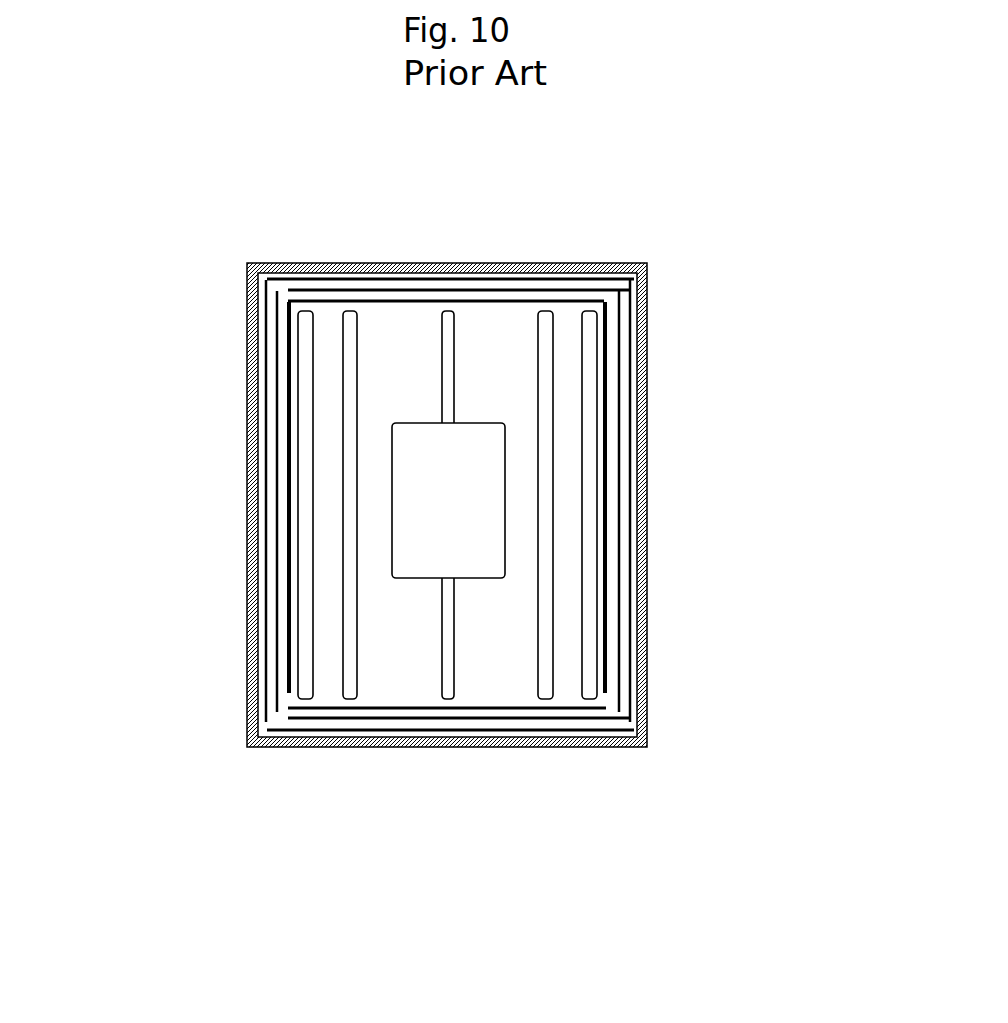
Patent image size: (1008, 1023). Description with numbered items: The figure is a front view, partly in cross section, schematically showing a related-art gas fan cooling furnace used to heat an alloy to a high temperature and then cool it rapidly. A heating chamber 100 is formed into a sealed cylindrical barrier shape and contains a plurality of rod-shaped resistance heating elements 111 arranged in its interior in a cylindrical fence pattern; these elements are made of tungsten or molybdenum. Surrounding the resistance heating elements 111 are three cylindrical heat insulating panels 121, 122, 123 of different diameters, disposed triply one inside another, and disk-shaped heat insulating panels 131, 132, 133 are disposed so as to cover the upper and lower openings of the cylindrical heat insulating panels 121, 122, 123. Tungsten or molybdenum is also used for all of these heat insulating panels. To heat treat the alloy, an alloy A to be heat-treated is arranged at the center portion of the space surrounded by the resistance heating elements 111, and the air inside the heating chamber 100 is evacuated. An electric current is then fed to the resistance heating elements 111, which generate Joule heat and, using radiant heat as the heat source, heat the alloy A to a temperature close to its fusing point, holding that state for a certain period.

The heating chamber 100 is at (438, 263).
The resistance heating element 111 is at (678, 473).
The heat insulating panel 121 is at (683, 376).
The heat insulating panel 122 is at (277, 520).
The heat insulating panel 123 is at (289, 650).
The heat insulating panel 131 is at (320, 770).
The heat insulating panel 132 is at (658, 783).
The heat insulating panel 133 is at (663, 707).
The alloy to be heat-treated A is at (438, 537).